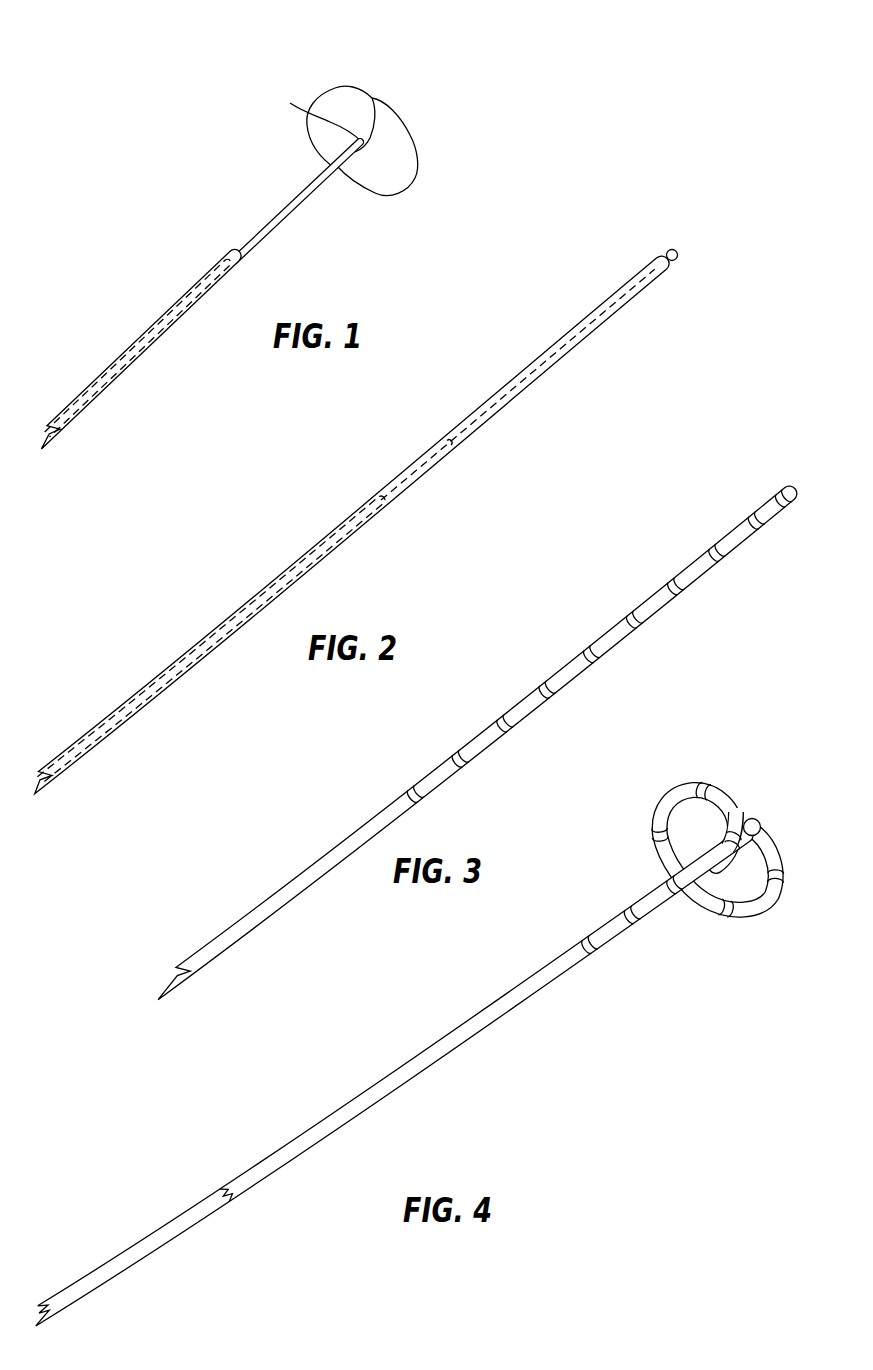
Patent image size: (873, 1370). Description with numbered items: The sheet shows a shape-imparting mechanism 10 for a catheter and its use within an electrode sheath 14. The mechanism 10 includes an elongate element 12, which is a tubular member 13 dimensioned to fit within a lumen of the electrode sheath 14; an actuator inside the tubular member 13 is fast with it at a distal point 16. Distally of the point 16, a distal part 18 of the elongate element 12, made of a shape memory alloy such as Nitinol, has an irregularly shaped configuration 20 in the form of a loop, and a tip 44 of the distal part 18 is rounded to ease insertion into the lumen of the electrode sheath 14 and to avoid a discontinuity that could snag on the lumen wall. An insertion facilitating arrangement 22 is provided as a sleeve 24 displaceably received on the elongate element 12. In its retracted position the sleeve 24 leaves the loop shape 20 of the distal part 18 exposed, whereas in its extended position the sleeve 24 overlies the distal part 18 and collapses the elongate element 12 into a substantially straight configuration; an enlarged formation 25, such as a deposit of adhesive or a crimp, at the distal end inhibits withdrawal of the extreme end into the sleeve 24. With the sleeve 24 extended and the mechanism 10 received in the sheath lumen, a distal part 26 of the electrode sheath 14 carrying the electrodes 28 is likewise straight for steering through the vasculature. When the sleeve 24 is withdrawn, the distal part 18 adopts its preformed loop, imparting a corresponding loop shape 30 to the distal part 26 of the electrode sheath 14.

In FIG. 1, the shape-imparting mechanism 10 is at (190, 206).
In FIG. 2, the shape-imparting mechanism 10 is at (340, 480).
In FIG. 1, the elongate element 12 is at (138, 338).
In FIG. 2, the elongate element 12 is at (233, 632).
In FIG. 1, the tubular member 13 is at (270, 236).
In FIG. 3, the electrode sheath 14 is at (469, 735).
In FIG. 4, the electrode sheath 14 is at (418, 1078).
In FIG. 1, the distal point 16 is at (290, 103).
In FIG. 1, the distal part 18 is at (426, 110).
In FIG. 2, the distal part 18 is at (452, 460).
In FIG. 1, the irregularly shaped configuration 20 is at (417, 165).
In FIG. 1, the insertion facilitating arrangement 22 is at (148, 380).
In FIG. 2, the insertion facilitating arrangement 22 is at (412, 516).
In FIG. 1, the sleeve 24 is at (122, 324).
In FIG. 2, the sleeve 24 is at (370, 549).
In FIG. 2, the enlarged formation 25 is at (678, 250).
In FIG. 3, the distal part of the electrode sheath 26 is at (591, 639).
In FIG. 4, the distal part of the electrode sheath 26 is at (727, 946).
In FIG. 3, the electrodes 28 is at (634, 626).
In FIG. 4, the loop shape 30 is at (781, 815).
In FIG. 1, the tip 44 is at (375, 90).